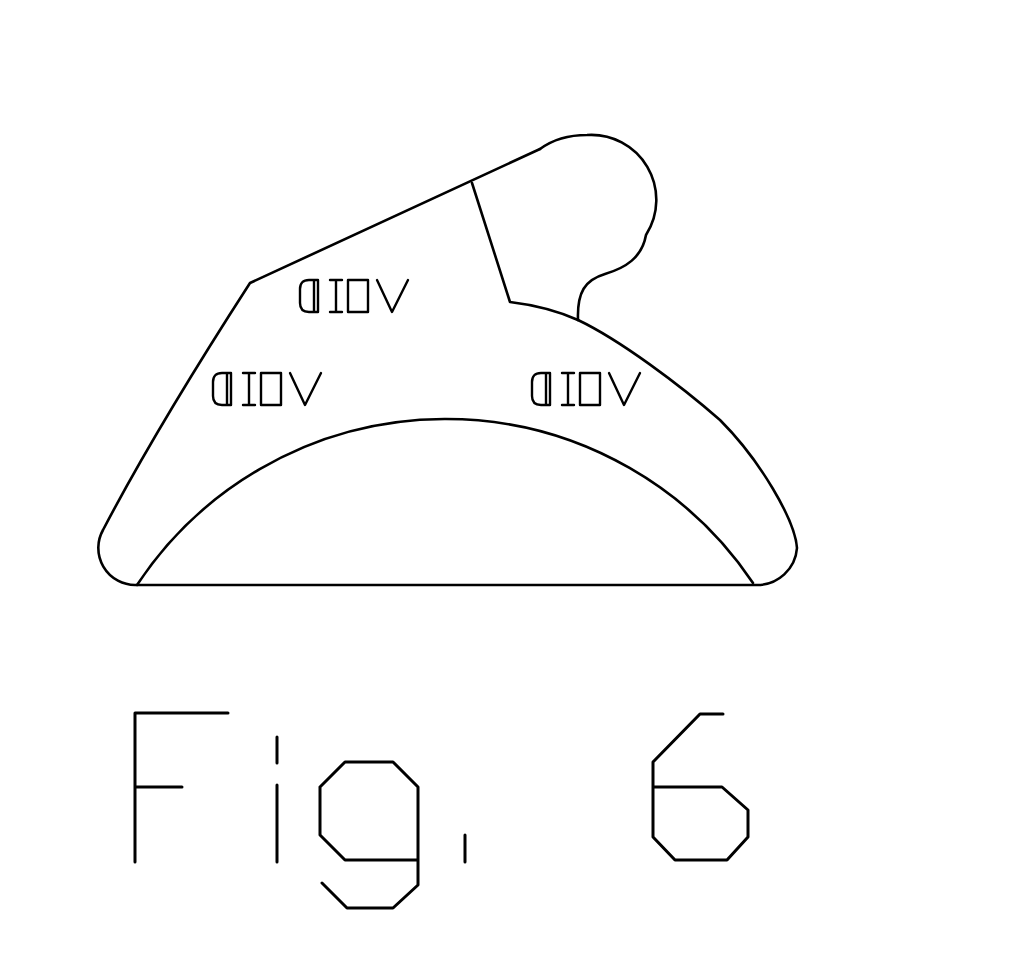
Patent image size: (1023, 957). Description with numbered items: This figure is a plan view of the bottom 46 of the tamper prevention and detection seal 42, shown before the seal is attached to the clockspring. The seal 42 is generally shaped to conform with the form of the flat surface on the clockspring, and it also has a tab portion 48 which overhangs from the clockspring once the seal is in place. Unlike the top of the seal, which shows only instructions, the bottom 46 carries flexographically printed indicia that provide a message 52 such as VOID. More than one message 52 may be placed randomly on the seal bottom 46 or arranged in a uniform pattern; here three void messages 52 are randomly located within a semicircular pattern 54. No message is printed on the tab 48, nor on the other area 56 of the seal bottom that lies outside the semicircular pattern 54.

The tamper prevention and detection seal 42 is at (781, 268).
The bottom of the seal 46 is at (742, 513).
The tab portion 48 is at (523, 217).
The message 52 is at (333, 277).
The semicircular pattern 54 is at (187, 435).
The other area 56 is at (602, 533).